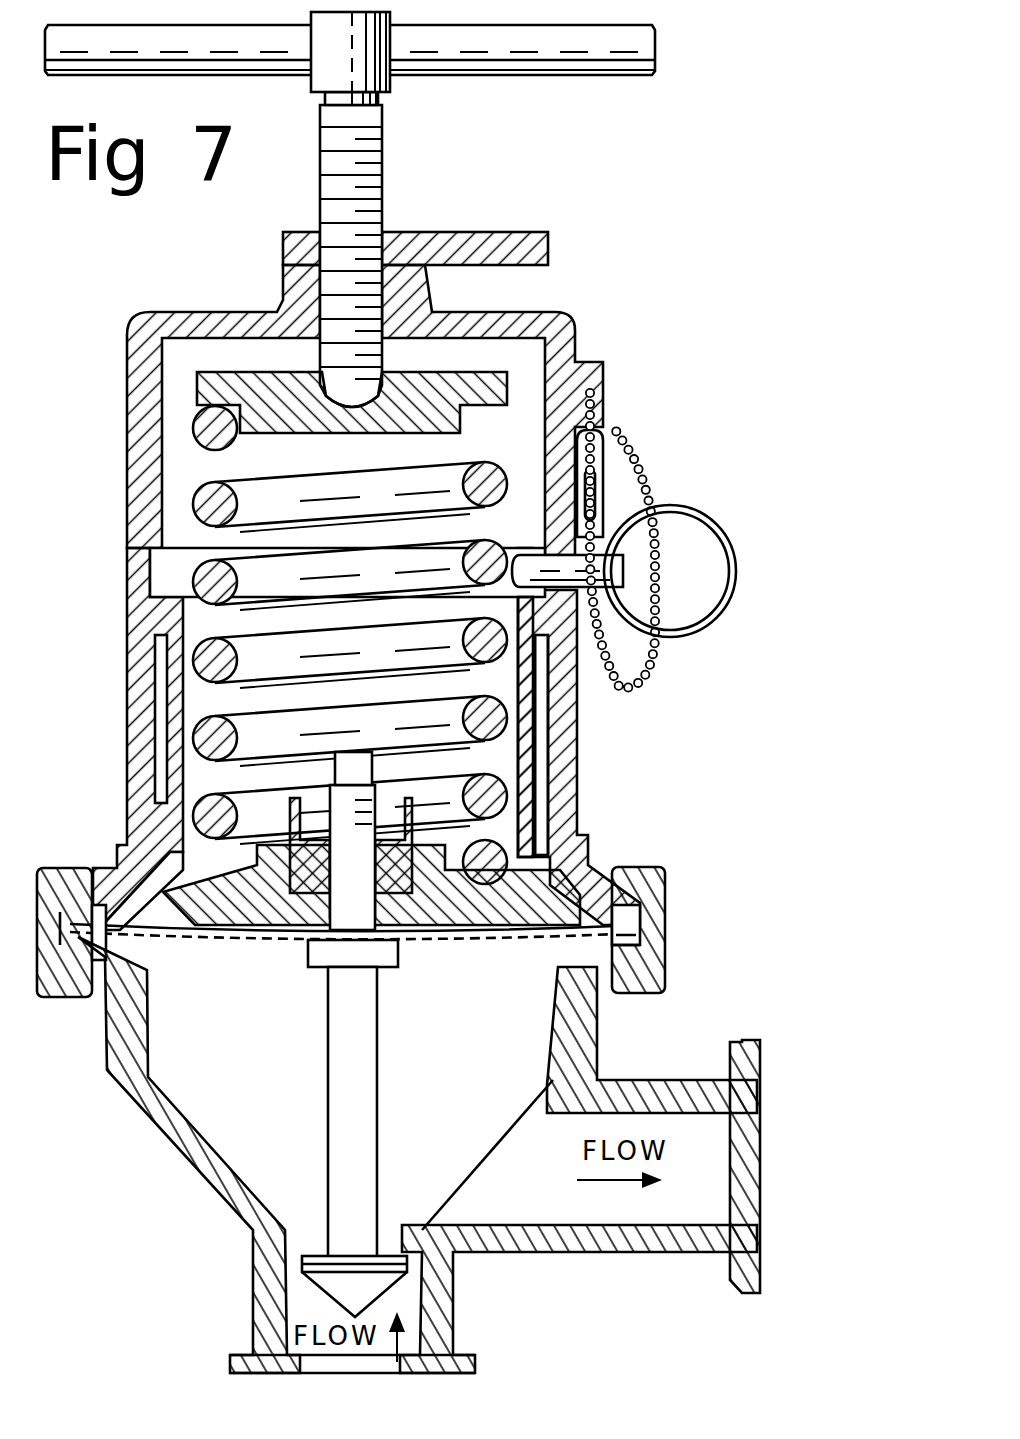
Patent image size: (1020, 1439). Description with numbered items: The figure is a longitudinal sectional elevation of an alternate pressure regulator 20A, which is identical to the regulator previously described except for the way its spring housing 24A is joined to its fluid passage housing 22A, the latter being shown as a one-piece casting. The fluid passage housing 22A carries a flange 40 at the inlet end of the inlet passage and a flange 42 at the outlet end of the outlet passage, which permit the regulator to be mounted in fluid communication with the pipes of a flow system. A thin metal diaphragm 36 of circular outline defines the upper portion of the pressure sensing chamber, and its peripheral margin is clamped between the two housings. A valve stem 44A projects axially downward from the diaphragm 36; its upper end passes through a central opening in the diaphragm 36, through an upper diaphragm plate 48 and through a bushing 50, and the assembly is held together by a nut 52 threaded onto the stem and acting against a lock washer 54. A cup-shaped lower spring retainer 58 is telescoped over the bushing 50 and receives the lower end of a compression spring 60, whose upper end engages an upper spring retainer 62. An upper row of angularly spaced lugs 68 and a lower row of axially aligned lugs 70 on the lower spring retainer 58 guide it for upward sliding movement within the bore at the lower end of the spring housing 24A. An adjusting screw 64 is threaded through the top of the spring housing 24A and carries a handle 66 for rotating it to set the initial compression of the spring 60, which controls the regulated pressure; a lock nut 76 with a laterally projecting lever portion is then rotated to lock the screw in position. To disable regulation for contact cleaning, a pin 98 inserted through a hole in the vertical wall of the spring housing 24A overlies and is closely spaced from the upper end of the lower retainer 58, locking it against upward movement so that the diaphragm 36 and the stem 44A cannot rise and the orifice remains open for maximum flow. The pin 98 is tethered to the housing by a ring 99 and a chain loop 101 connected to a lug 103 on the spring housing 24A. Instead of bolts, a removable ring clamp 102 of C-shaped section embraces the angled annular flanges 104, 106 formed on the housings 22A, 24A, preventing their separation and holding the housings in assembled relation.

The pressure regulator 20A is at (652, 362).
The fluid passage housing 22A is at (107, 1025).
The spring housing 24A is at (127, 795).
The diaphragm 36 is at (225, 942).
The flange 40 is at (470, 1357).
The flange 42 is at (740, 1278).
The valve stem 44A is at (378, 1040).
The upper diaphragm plate 48 is at (533, 937).
The bushing 50 is at (430, 848).
The nut 52 is at (460, 735).
The lock washer 54 is at (290, 818).
The lower spring retainer 58 is at (535, 705).
The compression spring 60 is at (193, 490).
The upper spring retainer 62 is at (458, 372).
The adjusting screw 64 is at (382, 148).
The handle 66 is at (565, 78).
The lugs 68 is at (160, 637).
The lugs 70 is at (540, 800).
The lock nut 76 is at (494, 232).
The pin 98 is at (657, 550).
The ring 99 is at (690, 508).
The chain loop 101 is at (620, 430).
The ring clamp 102 is at (673, 808).
The lug 103 is at (603, 362).
The angled annular flange 104 is at (632, 905).
The angled annular flange 106 is at (650, 958).